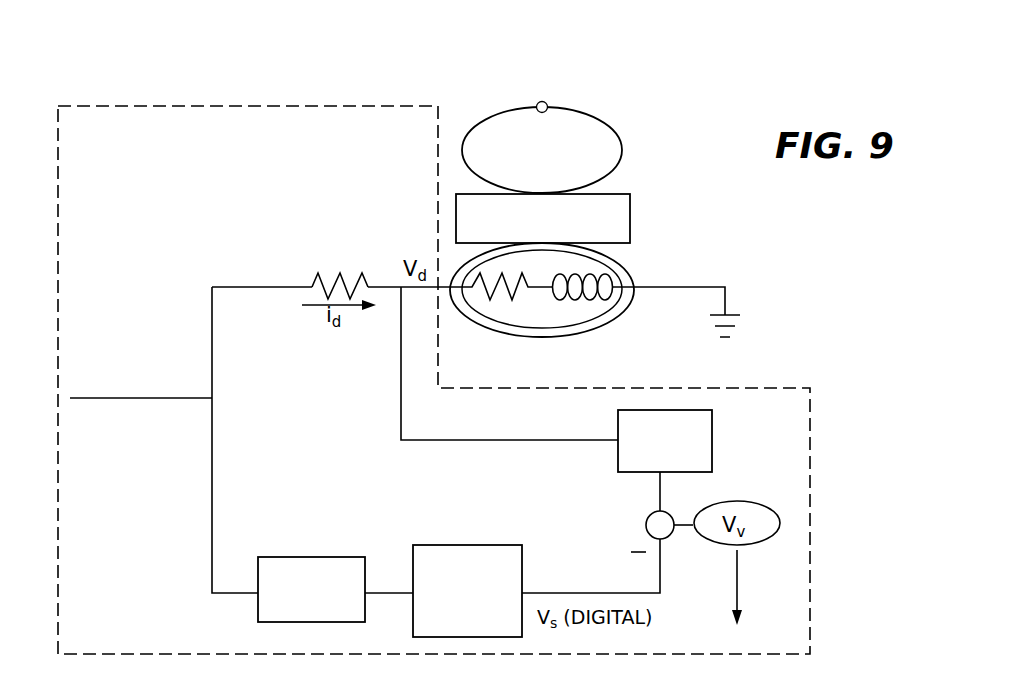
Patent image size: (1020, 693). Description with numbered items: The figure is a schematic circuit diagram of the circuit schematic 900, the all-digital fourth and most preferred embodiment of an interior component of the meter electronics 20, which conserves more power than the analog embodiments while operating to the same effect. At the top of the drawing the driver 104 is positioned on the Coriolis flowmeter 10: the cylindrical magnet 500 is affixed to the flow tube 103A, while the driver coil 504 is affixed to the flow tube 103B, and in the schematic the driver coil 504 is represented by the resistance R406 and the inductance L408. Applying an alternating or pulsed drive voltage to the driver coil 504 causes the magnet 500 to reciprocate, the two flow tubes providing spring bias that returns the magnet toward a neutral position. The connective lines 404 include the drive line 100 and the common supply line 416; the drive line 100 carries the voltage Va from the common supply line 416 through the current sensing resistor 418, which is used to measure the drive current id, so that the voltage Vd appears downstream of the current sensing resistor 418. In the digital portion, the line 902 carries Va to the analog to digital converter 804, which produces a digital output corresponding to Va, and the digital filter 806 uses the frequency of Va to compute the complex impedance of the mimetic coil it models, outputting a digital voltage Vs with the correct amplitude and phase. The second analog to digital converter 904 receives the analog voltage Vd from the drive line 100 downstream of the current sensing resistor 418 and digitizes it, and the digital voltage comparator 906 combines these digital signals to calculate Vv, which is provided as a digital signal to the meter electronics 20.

The circuit schematic 900 is at (122, 88).
The meter electronics 20 is at (192, 107).
The driver 104 is at (608, 114).
The flow tube 103A is at (620, 145).
The cylindrical magnet 500 is at (546, 102).
The Coriolis flowmeter 10 is at (622, 214).
The flow tube 103B is at (632, 273).
The driver coil 504 is at (613, 302).
The resistance R406 is at (498, 297).
The inductance L408 is at (580, 298).
The current sensing resistor 418 is at (349, 242).
The connective lines 404 is at (228, 272).
The drive line 100 is at (210, 317).
The common supply line 416 is at (107, 397).
The line 902 is at (212, 540).
The analog to digital converter 804 is at (298, 563).
The digital filter 806 is at (460, 553).
The second analog to digital converter 904 is at (708, 430).
The digital voltage comparator 906 is at (645, 524).